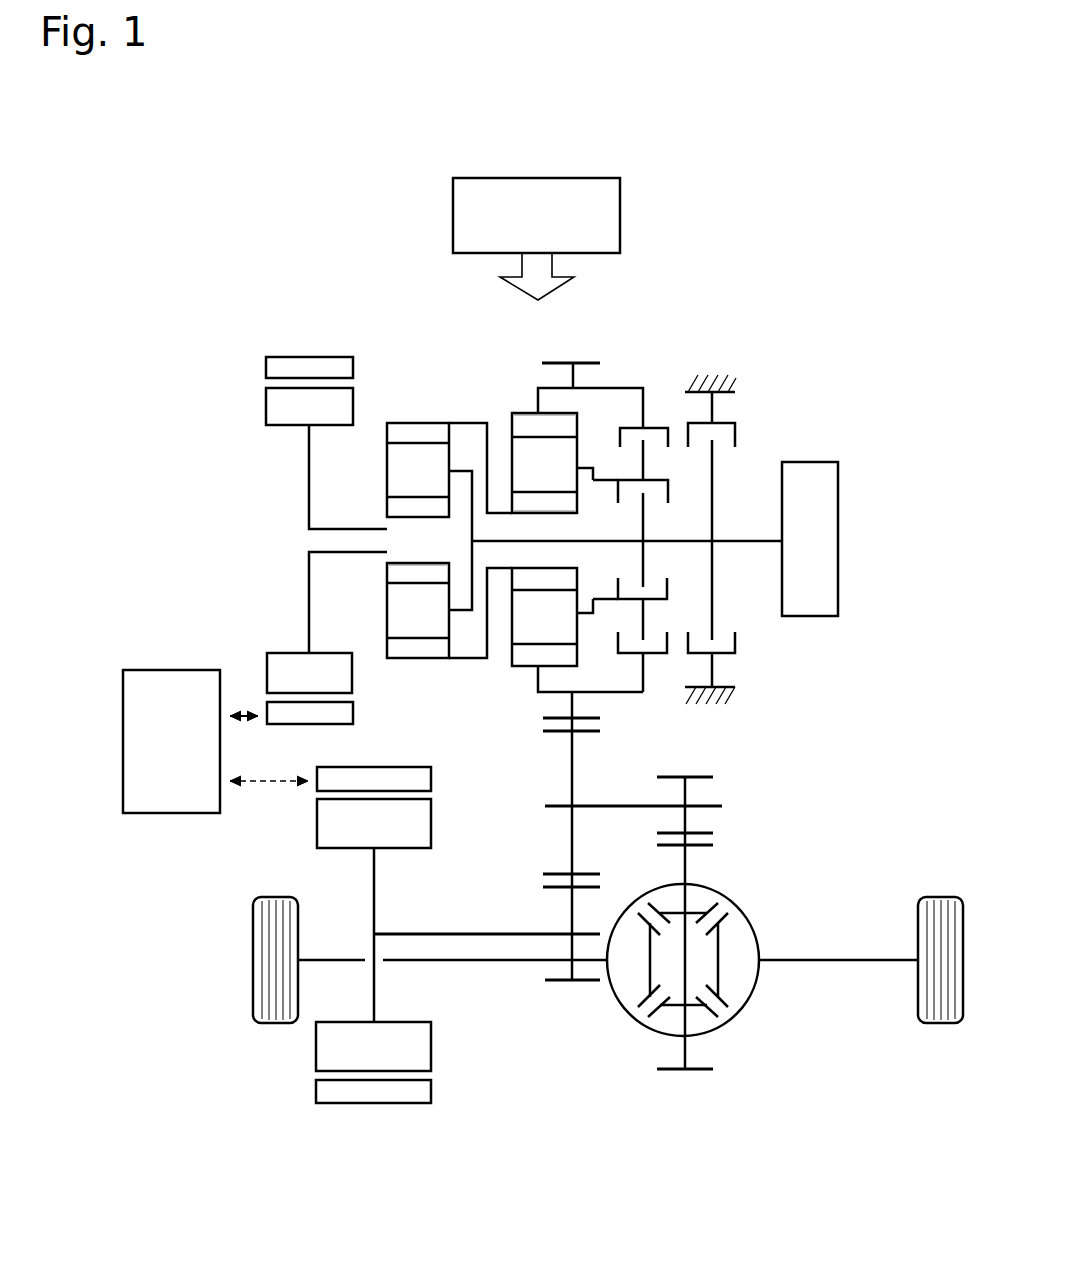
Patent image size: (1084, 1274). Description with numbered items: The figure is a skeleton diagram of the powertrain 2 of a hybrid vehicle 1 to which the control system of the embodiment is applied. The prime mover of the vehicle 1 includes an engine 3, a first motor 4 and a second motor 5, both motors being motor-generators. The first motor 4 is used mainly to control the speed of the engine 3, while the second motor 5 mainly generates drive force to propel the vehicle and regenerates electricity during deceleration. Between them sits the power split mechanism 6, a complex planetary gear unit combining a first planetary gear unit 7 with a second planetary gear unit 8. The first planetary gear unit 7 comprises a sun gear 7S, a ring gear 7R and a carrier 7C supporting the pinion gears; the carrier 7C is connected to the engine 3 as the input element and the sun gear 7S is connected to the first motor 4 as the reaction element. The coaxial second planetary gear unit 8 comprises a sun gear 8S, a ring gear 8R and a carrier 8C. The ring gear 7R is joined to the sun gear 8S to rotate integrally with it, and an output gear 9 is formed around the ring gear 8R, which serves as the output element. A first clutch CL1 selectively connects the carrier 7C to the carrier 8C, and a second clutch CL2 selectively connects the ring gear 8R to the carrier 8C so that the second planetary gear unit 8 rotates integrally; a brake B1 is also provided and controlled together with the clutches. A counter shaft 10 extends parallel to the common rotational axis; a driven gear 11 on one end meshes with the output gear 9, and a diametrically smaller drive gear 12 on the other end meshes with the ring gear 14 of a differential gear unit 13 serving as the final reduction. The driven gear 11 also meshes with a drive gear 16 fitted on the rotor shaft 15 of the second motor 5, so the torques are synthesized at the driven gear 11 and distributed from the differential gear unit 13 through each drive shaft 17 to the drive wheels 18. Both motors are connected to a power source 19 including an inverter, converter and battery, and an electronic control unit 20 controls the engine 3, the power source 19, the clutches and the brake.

The hybrid vehicle 1 is at (707, 230).
The powertrain 2 is at (166, 458).
The engine 3 is at (814, 462).
The first motor 4 is at (251, 397).
The second motor 5 is at (284, 1064).
The power split mechanism 6 is at (418, 347).
The first planetary gear unit 7 is at (428, 392).
The sun gear 7S is at (393, 578).
The carrier 7C is at (472, 537).
The ring gear 7R is at (427, 663).
The second planetary gear unit 8 is at (518, 392).
The sun gear 8S is at (553, 505).
The carrier 8C is at (603, 478).
The ring gear 8R is at (571, 422).
The output gear 9 is at (546, 716).
The counter shaft 10 is at (716, 805).
The driven gear 11 is at (550, 733).
The drive gear 12 is at (700, 777).
The differential gear unit 13 is at (766, 920).
The ring gear 14 is at (711, 845).
The rotor shaft 15 is at (459, 933).
The drive gear 16 is at (552, 890).
The drive shaft 17 is at (484, 967).
The drive wheels 18 is at (252, 956).
The power source 19 is at (171, 670).
The electronic control unit 20 is at (547, 177).
The first clutch CL1 is at (672, 588).
The second clutch CL2 is at (658, 412).
The brake B1 is at (746, 426).